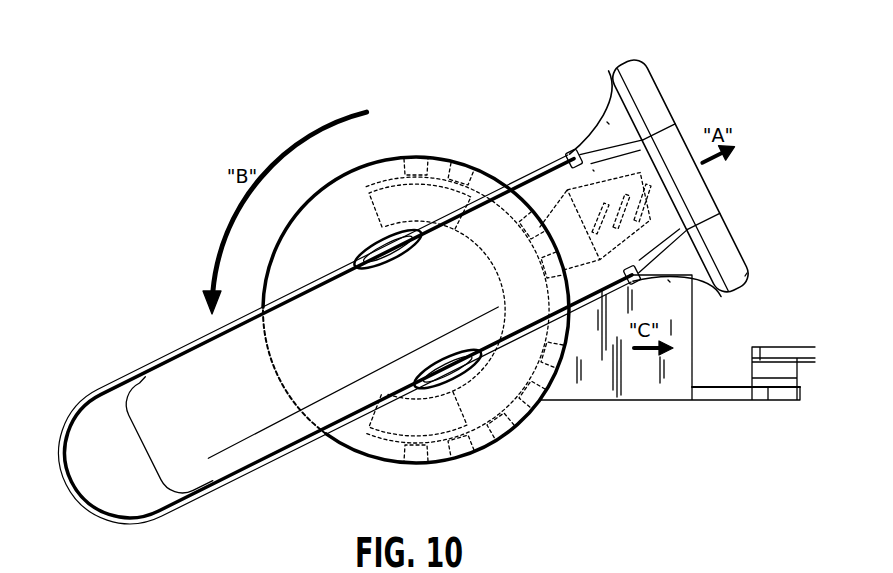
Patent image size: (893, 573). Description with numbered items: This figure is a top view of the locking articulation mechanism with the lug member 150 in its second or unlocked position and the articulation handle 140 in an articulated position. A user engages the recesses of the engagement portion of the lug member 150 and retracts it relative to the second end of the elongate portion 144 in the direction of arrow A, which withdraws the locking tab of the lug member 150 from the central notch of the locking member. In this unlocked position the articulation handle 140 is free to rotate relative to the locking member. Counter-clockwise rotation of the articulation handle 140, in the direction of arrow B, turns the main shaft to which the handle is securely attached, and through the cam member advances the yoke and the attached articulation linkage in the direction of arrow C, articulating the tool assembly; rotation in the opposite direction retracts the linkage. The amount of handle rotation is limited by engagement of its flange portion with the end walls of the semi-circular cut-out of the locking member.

The articulation handle 140 is at (267, 474).
The elongate portion 144 is at (435, 257).
The lug member 150 is at (622, 186).